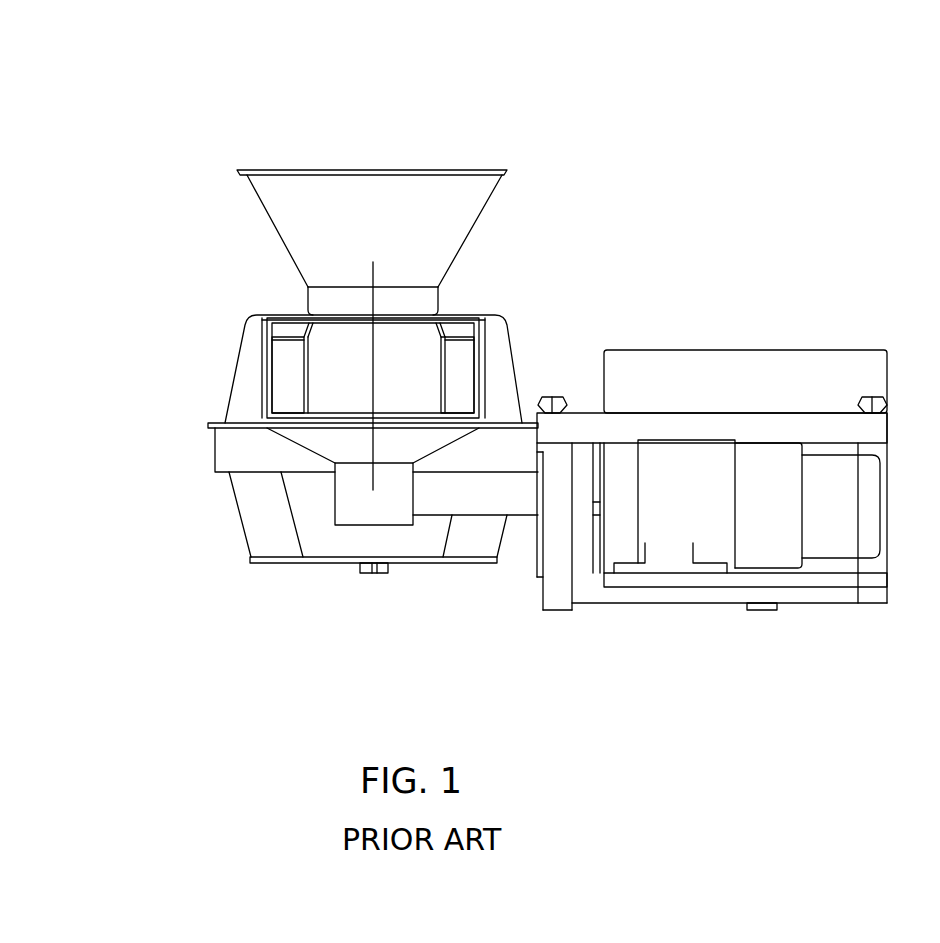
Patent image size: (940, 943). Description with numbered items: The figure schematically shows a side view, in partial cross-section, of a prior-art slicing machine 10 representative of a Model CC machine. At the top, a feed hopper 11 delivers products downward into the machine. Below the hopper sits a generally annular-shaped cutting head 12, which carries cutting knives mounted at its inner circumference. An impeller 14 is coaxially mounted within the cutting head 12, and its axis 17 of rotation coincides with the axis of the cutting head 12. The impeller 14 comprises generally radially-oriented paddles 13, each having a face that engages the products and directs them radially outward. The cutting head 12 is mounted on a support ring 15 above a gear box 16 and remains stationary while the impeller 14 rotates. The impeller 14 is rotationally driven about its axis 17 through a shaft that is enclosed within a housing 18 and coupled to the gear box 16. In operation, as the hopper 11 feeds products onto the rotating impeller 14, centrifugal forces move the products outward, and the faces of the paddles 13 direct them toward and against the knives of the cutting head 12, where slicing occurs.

The machine 10 is at (234, 66).
The feed hopper 11 is at (323, 255).
The cutting head 12 is at (262, 373).
The paddles 13 is at (290, 385).
The impeller 14 is at (447, 335).
The support ring 15 is at (290, 438).
The gear box 16 is at (355, 508).
The axis 17 is at (373, 262).
The housing 18 is at (483, 502).